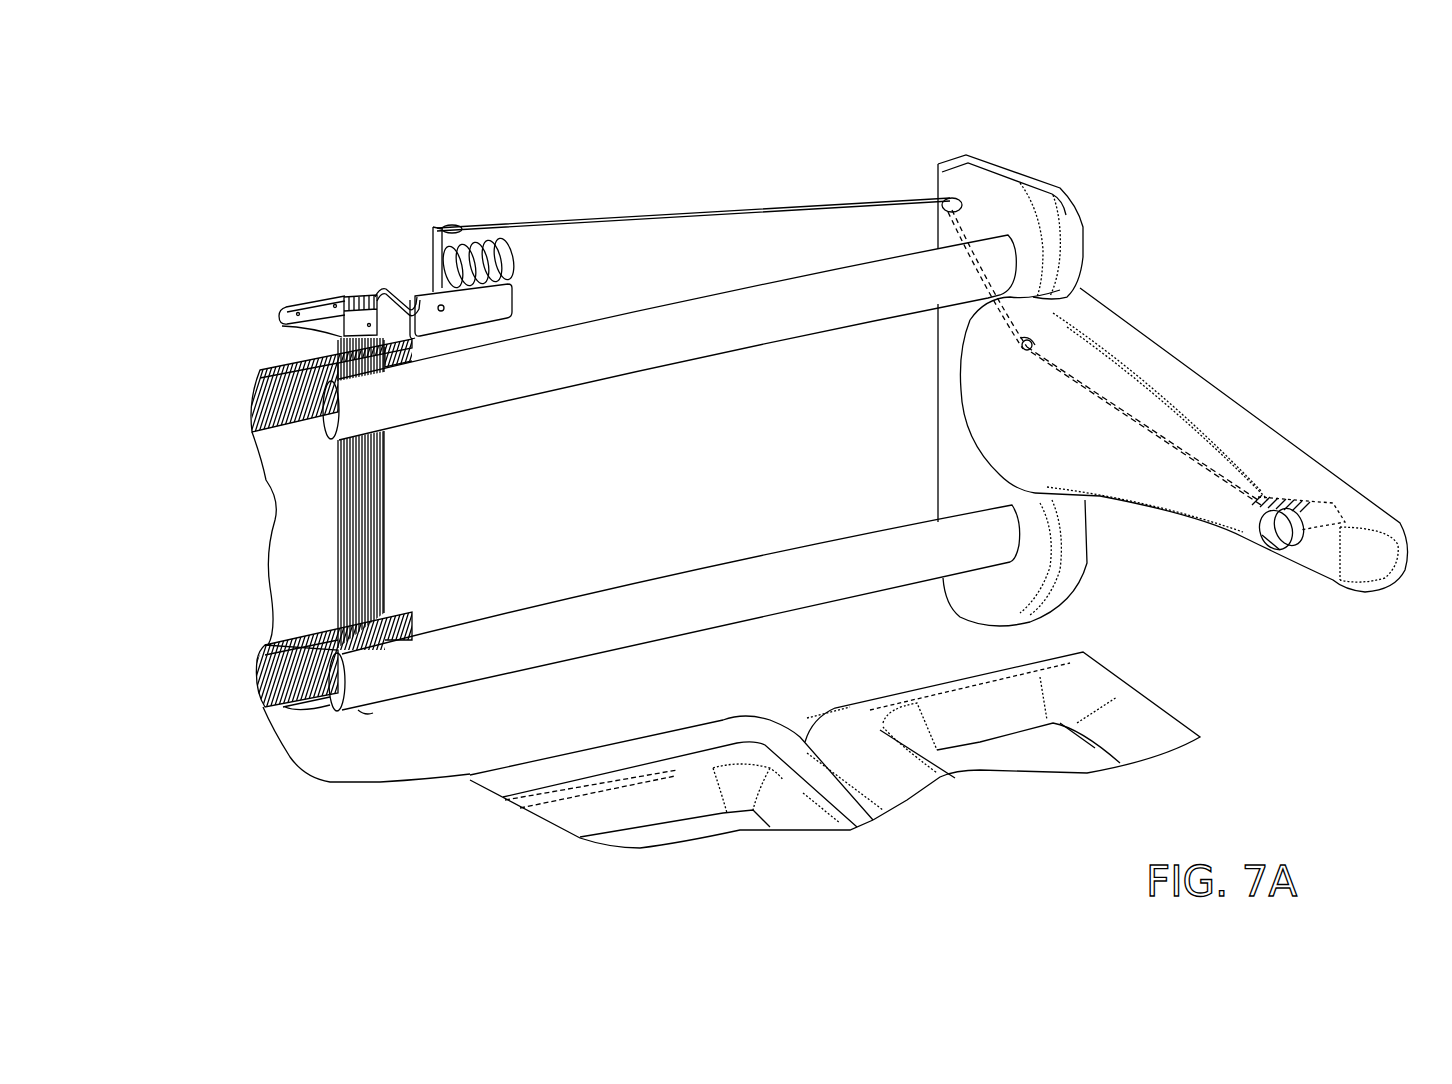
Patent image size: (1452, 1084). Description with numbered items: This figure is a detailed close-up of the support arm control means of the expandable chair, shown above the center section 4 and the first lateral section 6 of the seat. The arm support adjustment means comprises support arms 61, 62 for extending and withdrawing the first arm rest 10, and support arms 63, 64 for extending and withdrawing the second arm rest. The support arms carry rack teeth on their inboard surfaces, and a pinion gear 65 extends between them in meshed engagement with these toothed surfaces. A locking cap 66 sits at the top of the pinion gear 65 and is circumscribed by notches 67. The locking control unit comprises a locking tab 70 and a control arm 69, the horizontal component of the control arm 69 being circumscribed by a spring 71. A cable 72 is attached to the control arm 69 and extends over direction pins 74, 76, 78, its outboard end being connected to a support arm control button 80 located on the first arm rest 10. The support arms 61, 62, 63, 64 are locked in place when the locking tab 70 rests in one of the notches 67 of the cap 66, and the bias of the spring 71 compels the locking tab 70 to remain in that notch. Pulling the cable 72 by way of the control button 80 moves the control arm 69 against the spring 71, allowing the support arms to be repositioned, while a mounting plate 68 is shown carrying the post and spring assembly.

The center section 4 is at (667, 770).
The first lateral section 6 is at (1120, 717).
The first arm rest 10 is at (1210, 408).
The support arm 61 is at (727, 320).
The support arm 62 is at (755, 598).
The support arm 63 is at (287, 413).
The support arm 64 is at (297, 668).
The pinion gear 65 is at (385, 510).
The locking cap 66 is at (308, 326).
The notches 67 is at (352, 300).
The mounting plate 68 is at (483, 305).
The control arm 69 is at (431, 250).
The locking tab 70 is at (388, 289).
The spring 71 is at (510, 255).
The cable 72 is at (697, 212).
The direction pin 74 is at (947, 197).
The direction pin 76 is at (1032, 342).
The direction pin 78 is at (1260, 503).
The support arm control button 80 is at (1283, 533).